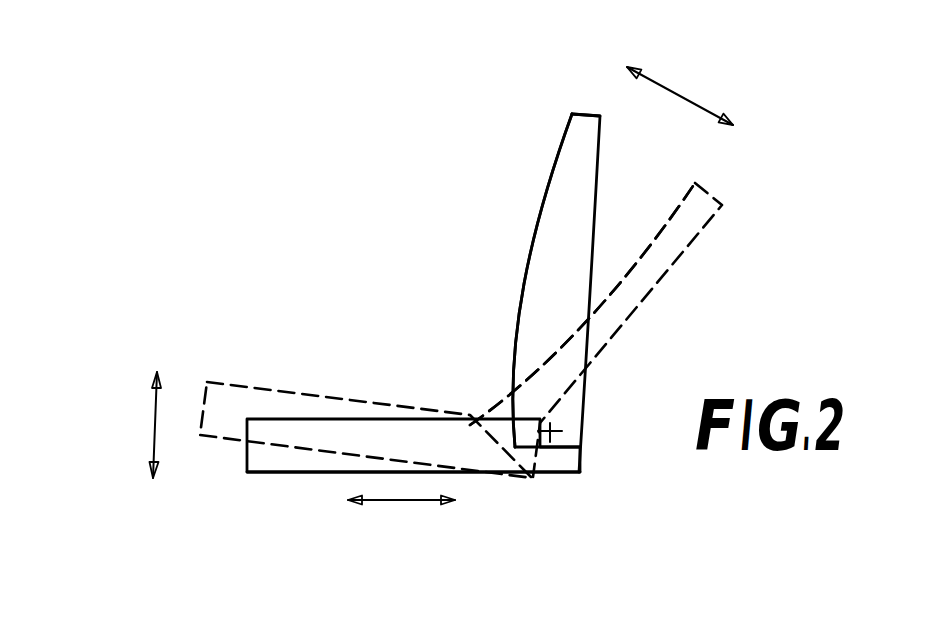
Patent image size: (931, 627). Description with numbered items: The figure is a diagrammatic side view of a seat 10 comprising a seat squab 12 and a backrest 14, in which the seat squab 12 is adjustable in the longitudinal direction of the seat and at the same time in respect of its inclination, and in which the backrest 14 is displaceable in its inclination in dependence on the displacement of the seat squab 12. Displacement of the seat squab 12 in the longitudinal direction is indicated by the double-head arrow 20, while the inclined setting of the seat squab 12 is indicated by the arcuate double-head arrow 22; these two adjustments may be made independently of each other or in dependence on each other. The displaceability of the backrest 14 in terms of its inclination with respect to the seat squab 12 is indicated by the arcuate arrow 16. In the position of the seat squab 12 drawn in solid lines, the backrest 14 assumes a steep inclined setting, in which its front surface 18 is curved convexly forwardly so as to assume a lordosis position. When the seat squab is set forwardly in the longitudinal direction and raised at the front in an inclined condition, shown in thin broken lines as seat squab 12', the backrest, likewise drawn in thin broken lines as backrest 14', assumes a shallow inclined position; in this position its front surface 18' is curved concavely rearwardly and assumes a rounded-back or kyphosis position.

The seat 10 is at (380, 291).
The seat squab 12 is at (412, 495).
The seat squab in forward raised position 12' is at (366, 381).
The backrest 14 is at (527, 293).
The backrest in shallow inclined position 14' is at (635, 330).
The arcuate arrow 16 is at (685, 93).
The front surface of backrest 18 is at (495, 280).
The front surface of backrest in shallow inclined position 18' is at (582, 294).
The double-head arrow 20 is at (398, 503).
The arcuate double-head arrow 22 is at (155, 418).